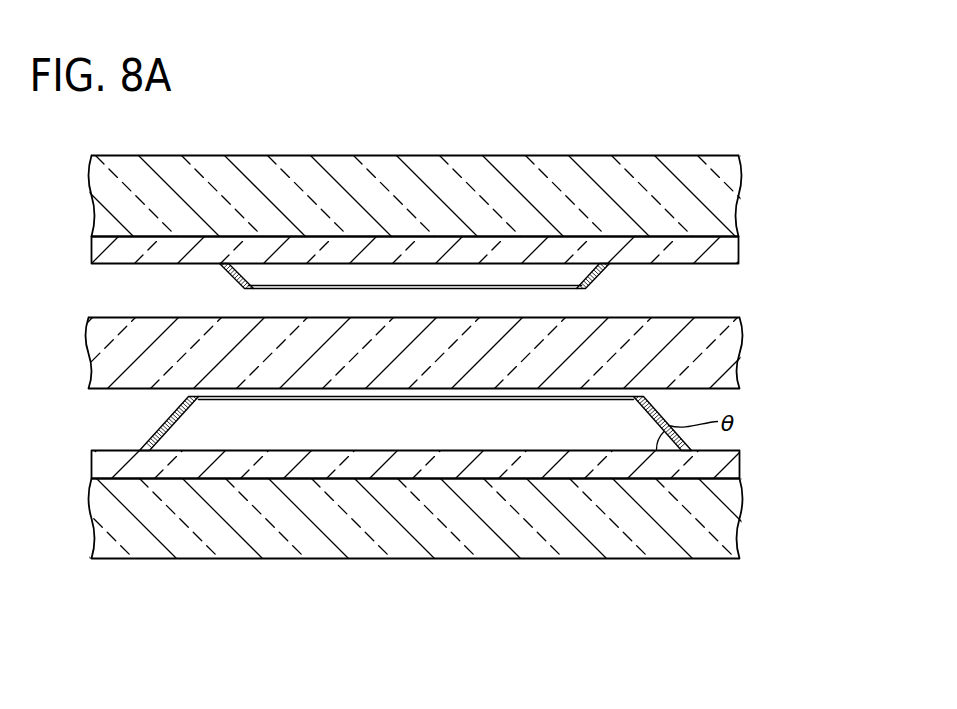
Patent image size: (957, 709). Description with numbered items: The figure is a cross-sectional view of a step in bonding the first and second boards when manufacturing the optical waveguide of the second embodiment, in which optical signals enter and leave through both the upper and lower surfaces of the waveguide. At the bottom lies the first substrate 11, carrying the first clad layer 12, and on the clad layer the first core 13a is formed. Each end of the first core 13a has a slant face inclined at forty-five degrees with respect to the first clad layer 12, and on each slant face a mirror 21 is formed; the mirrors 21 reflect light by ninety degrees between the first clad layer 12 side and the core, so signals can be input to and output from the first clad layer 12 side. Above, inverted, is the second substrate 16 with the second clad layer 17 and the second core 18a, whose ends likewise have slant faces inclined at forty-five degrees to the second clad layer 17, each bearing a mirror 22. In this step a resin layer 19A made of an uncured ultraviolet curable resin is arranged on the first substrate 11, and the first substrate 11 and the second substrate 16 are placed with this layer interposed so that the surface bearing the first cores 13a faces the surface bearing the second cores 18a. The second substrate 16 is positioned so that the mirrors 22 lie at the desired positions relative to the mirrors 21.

The first substrate 11 is at (727, 528).
The first clad layer 12 is at (733, 457).
The first core 13a is at (513, 425).
The second substrate 16 is at (722, 199).
The second clad layer 17 is at (735, 244).
The second core 18a is at (271, 283).
The resin layer 19A is at (722, 342).
The mirror 21 is at (160, 427).
The mirror 22 is at (219, 264).